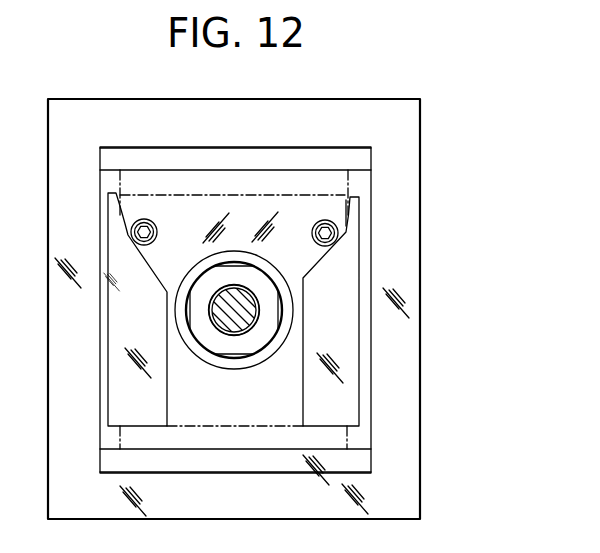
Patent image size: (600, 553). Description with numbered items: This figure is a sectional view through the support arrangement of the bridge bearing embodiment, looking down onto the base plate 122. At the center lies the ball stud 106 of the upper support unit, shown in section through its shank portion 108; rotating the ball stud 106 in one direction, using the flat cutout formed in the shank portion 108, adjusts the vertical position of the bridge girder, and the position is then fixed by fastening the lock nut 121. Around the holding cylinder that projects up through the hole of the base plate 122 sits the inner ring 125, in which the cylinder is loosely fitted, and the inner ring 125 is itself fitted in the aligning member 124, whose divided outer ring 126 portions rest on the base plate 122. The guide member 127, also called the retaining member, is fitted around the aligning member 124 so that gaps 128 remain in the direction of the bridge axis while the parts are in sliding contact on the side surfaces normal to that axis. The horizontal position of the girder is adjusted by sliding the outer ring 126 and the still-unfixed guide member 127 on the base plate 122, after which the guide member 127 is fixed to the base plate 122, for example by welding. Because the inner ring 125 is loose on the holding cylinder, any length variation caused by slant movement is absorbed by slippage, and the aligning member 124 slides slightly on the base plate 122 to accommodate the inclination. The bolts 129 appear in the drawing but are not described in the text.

The ball stud 106 is at (209, 310).
The shank portion 108 is at (218, 322).
The lock nut 121 is at (268, 310).
The base plate 122 is at (413, 191).
The aligning member 124 is at (177, 212).
The inner ring 125 is at (260, 352).
The outer ring 126 is at (300, 207).
The guide member 127 is at (342, 157).
The gaps 128 is at (240, 178).
The bolt 129 is at (122, 375).